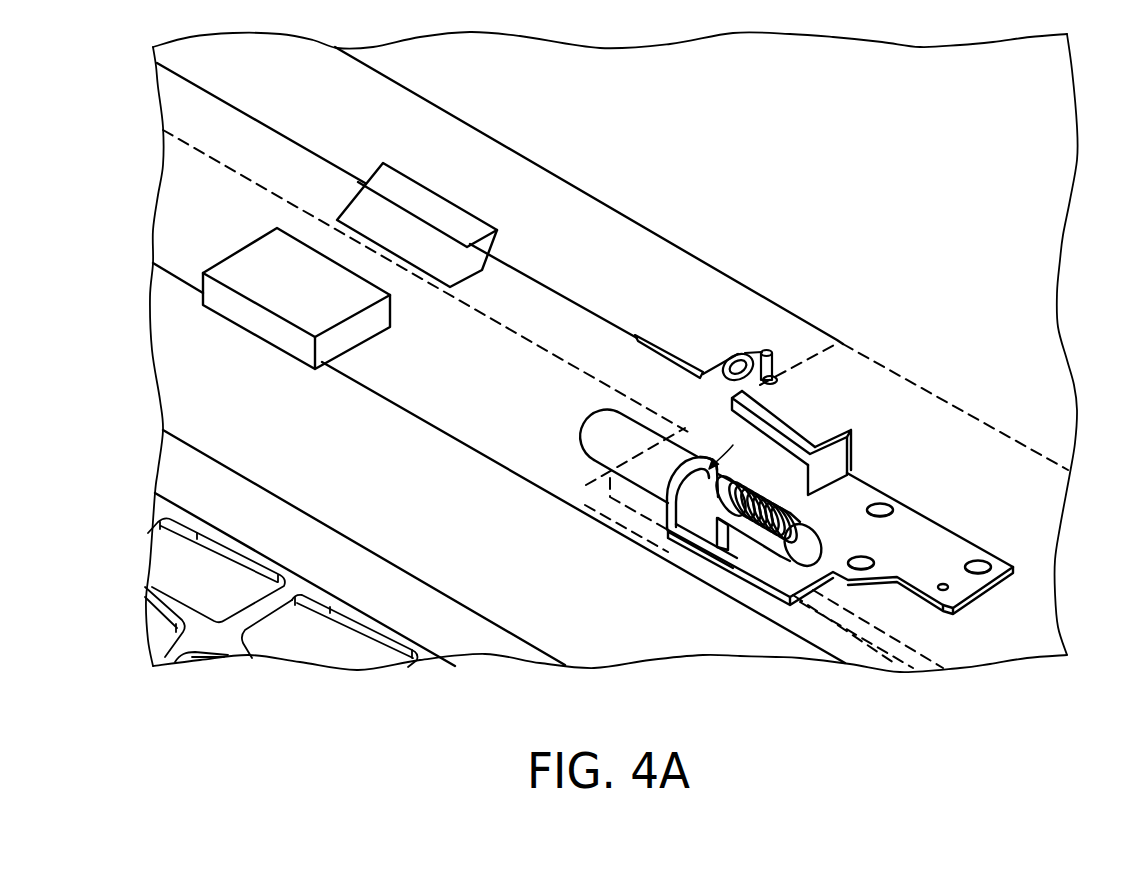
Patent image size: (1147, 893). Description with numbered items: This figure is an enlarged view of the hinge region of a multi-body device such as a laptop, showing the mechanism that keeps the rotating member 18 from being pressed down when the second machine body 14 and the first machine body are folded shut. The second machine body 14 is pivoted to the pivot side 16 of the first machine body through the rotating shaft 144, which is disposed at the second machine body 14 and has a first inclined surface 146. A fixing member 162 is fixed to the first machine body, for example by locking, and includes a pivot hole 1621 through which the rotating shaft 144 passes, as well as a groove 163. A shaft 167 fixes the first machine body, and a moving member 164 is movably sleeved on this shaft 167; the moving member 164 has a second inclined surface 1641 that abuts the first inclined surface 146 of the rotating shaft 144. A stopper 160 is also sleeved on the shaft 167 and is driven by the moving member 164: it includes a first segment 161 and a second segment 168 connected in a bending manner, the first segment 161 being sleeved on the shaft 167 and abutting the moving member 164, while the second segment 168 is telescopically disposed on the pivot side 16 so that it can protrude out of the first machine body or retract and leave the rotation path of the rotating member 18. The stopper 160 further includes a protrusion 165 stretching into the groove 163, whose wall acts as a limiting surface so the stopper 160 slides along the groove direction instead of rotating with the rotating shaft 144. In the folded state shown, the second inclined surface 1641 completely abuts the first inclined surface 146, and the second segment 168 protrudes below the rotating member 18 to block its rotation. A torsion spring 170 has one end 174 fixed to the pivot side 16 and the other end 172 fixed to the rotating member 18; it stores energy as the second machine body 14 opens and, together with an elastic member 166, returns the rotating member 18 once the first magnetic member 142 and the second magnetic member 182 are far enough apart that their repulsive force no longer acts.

The second machine body 14 is at (173, 247).
The pivot side 16 is at (1053, 457).
The rotating member 18 is at (752, 288).
The first magnetic member 142 is at (268, 330).
The rotating shaft 144 is at (605, 450).
The first inclined surface 146 is at (731, 445).
The stopper 160 is at (854, 380).
The first segment 161 is at (850, 455).
The fixing member 162 is at (867, 483).
The groove 163 is at (790, 566).
The moving member 164 is at (688, 580).
The protrusion 165 is at (775, 545).
The elastic member 166 is at (930, 543).
The shaft 167 is at (752, 500).
The second segment 168 is at (778, 352).
The torsion spring 170 is at (770, 350).
The other end of the torsion spring 172 is at (637, 333).
The one end of the torsion spring 174 is at (740, 350).
The second magnetic member 182 is at (445, 213).
The pivot hole 1621 is at (673, 500).
The second inclined surface 1641 is at (707, 485).